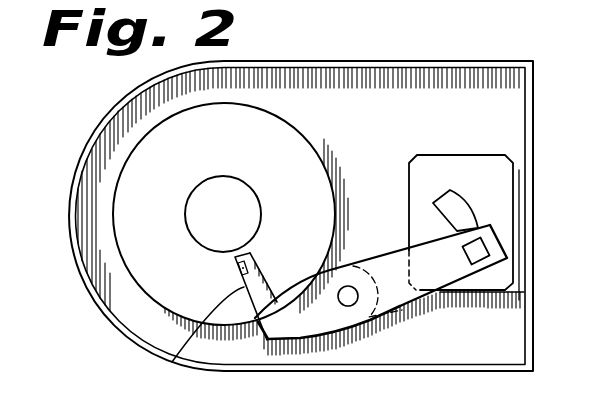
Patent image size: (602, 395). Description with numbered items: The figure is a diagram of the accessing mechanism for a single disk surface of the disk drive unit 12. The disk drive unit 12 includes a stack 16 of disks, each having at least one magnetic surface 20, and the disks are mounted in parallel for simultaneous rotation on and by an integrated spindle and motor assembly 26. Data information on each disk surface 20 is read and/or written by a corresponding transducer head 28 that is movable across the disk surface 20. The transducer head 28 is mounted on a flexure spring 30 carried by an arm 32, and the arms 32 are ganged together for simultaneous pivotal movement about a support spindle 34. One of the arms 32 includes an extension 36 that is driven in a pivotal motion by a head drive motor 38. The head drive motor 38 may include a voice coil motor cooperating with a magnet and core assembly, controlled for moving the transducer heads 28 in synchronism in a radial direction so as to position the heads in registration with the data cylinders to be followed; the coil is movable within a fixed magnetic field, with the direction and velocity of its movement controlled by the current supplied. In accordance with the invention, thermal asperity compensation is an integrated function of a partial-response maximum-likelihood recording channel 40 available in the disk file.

The disk drive unit 12 is at (405, 52).
The stack 16 is at (97, 212).
The magnetic surface 20 is at (169, 124).
The integrated spindle and motor assembly 26 is at (242, 190).
The transducer head 28 is at (238, 267).
The flexure spring 30 is at (172, 358).
The arm 32 is at (268, 326).
The support spindle 34 is at (350, 286).
The extension 36 is at (450, 277).
The head drive motor 38 is at (482, 160).
The partial-response maximum-likelihood (PRML) recording channel 40 is at (478, 248).